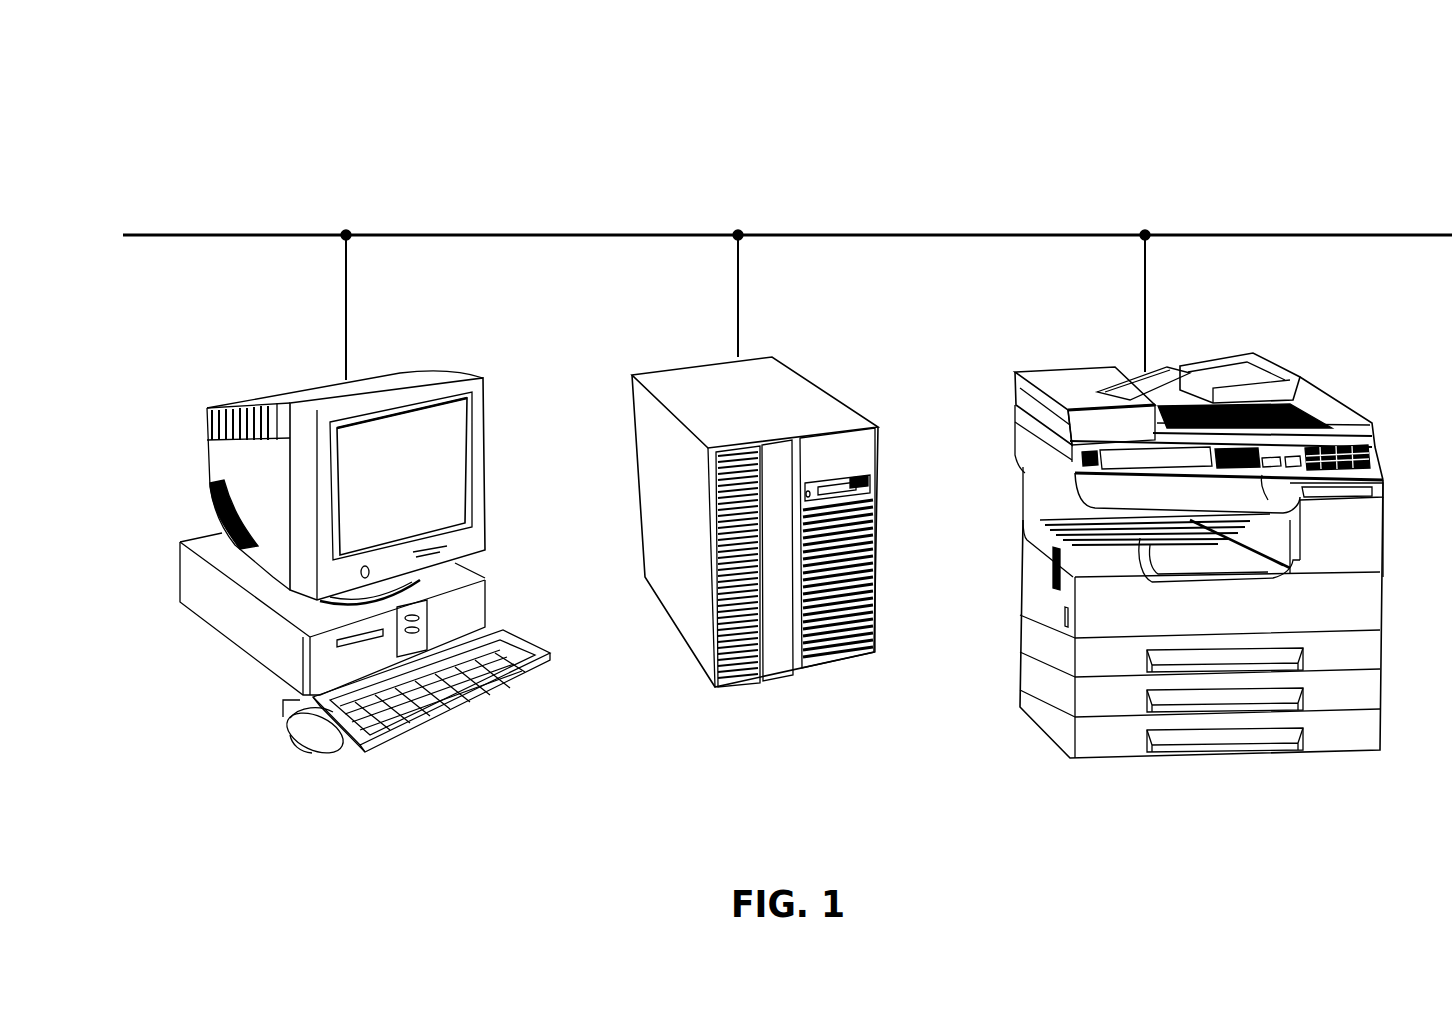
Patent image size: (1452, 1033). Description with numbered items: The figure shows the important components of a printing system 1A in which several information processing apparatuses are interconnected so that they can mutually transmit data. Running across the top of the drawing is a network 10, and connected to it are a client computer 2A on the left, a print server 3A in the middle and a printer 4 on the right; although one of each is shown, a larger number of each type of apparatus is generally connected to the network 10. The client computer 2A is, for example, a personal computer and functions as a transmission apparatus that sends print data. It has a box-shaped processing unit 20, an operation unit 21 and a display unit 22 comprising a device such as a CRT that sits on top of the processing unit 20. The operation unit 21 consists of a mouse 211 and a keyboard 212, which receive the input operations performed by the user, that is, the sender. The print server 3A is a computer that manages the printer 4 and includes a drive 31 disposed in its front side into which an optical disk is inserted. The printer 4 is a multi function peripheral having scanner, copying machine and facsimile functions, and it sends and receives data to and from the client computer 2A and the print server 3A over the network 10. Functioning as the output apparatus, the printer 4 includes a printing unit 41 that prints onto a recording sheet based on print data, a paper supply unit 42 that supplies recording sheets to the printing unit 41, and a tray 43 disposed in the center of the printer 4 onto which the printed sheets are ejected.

The printing system 1A is at (318, 79).
The network 10 is at (497, 232).
The client computer 2A is at (236, 372).
The processing unit 20 is at (250, 645).
The operation unit 21 is at (467, 727).
The mouse 211 is at (296, 750).
The keyboard 212 is at (490, 700).
The display unit 22 is at (487, 440).
The print server 3A is at (636, 355).
The drive 31 is at (865, 485).
The printer 4 is at (1037, 355).
The printing unit 41 is at (1394, 594).
The paper supply unit 42 is at (1028, 613).
The tray 43 is at (1160, 530).